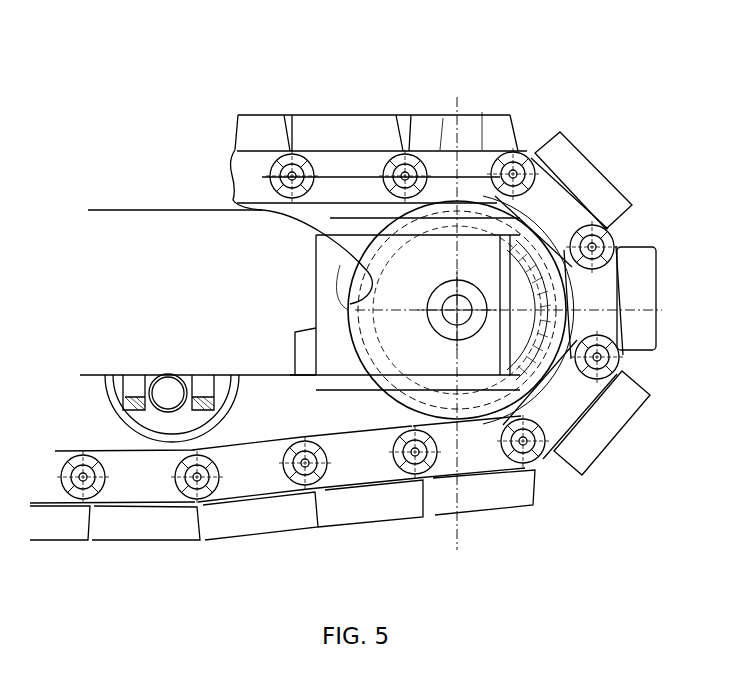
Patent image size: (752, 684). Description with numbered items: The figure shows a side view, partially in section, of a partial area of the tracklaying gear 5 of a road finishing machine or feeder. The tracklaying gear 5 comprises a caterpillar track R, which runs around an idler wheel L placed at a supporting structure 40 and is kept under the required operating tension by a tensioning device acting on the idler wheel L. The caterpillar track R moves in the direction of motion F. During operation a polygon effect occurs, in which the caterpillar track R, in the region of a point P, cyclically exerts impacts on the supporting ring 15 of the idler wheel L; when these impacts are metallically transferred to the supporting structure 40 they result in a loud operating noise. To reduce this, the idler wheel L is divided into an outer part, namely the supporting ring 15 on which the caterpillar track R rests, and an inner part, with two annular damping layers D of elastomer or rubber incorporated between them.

The tracklaying gear 5 is at (223, 200).
The supporting structure 40 is at (152, 223).
The supporting ring 15 is at (460, 353).
The annular damping layers D is at (500, 268).
The idler wheel L is at (334, 272).
The direction of motion F is at (320, 68).
The point P is at (443, 118).
The caterpillar track R is at (482, 112).